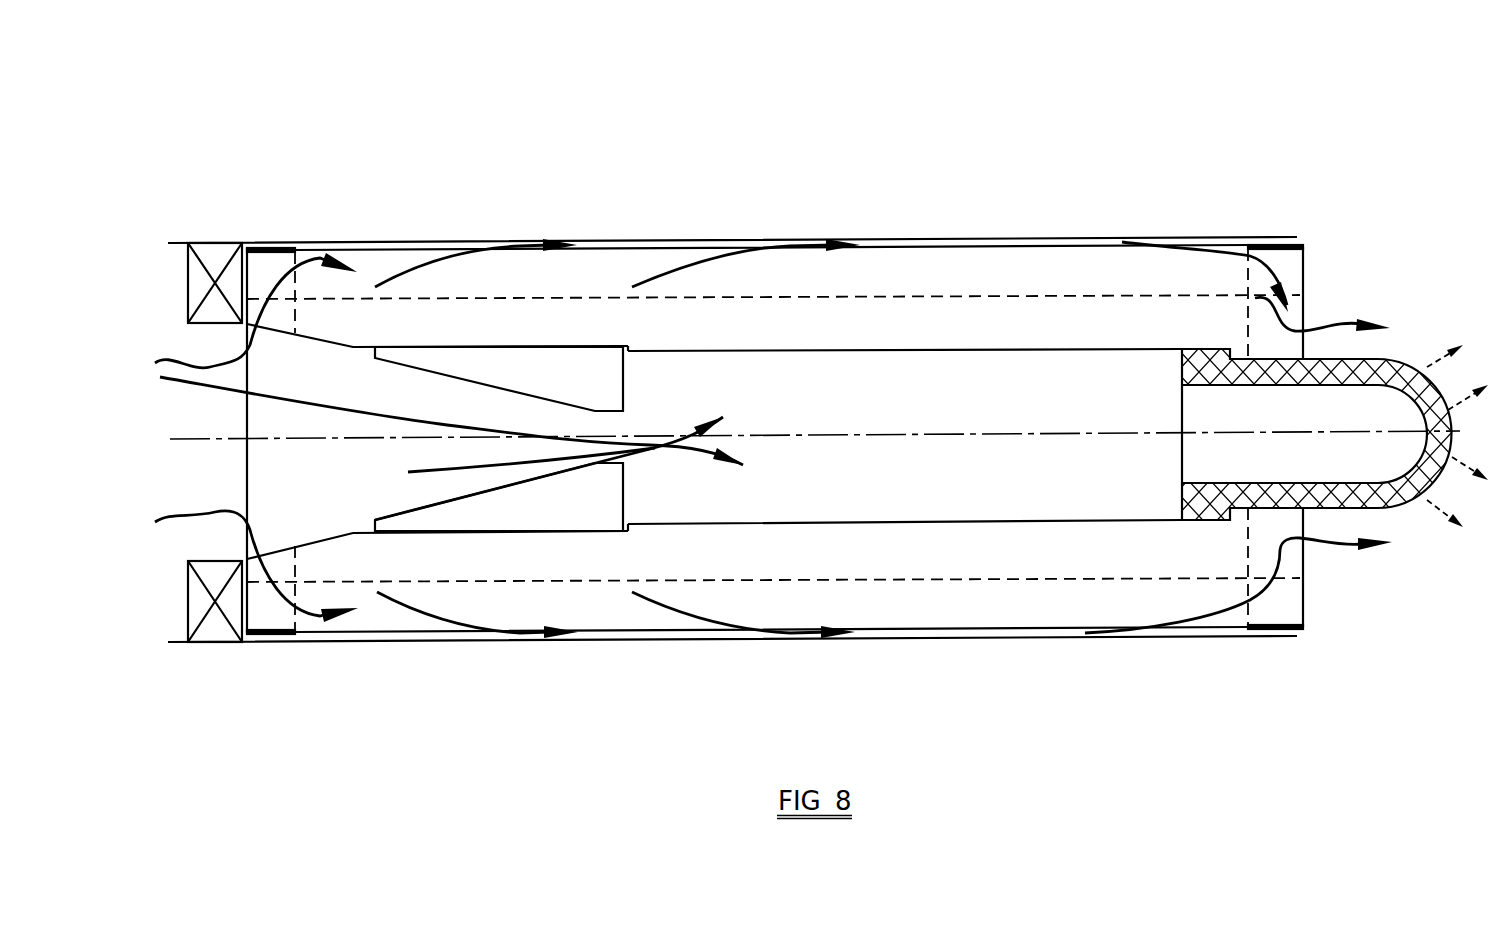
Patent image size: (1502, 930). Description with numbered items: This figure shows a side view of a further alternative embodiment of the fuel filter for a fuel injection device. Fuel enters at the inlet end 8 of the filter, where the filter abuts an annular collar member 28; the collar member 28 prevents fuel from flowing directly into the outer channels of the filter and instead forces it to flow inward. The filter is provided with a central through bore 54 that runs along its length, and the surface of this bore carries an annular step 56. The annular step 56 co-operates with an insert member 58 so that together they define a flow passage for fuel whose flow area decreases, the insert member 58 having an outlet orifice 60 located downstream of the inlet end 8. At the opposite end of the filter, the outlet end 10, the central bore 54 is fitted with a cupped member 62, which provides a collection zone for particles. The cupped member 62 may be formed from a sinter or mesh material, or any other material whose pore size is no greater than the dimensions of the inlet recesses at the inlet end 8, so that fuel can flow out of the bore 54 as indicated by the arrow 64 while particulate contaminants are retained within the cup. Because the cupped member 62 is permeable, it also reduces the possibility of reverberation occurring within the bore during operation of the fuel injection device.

The inlet end 8 is at (168, 325).
The annular collar member 28 is at (227, 220).
The insert member 58 is at (578, 358).
The outlet orifice 60 is at (632, 419).
The annular step 56 is at (645, 343).
The central through bore 54 is at (1060, 335).
The outlet end 10 is at (1333, 297).
The cupped member 62 is at (1405, 522).
The arrow 64 is at (1476, 375).